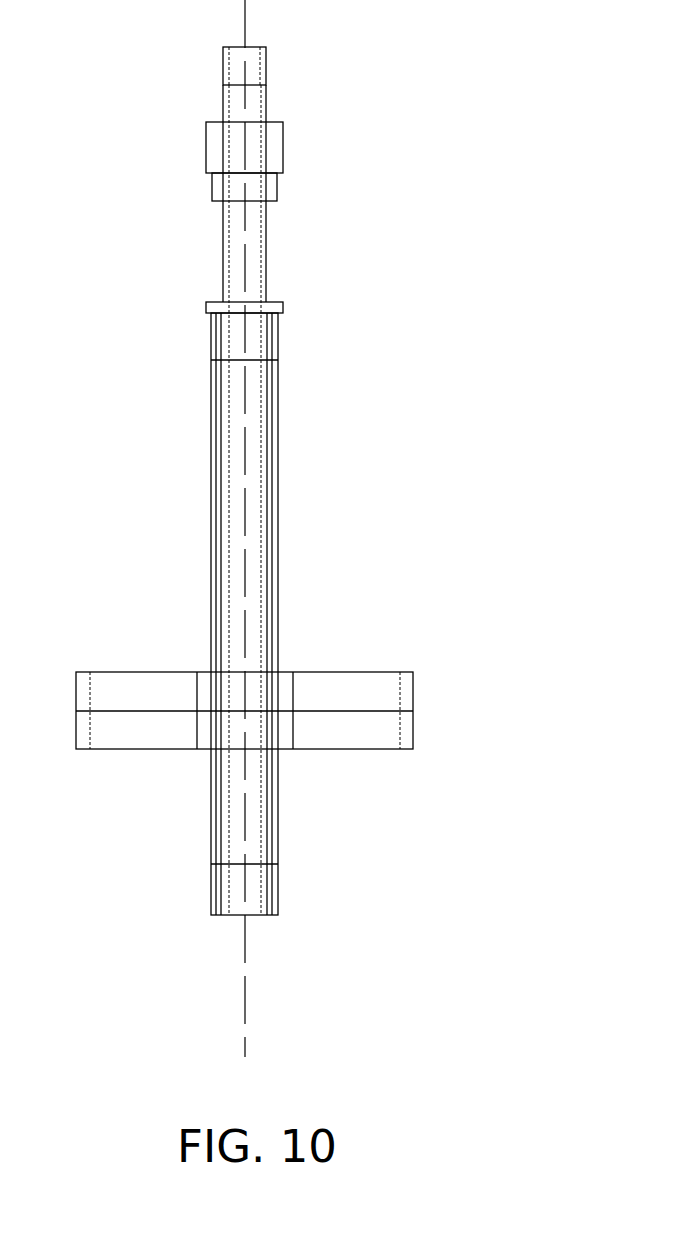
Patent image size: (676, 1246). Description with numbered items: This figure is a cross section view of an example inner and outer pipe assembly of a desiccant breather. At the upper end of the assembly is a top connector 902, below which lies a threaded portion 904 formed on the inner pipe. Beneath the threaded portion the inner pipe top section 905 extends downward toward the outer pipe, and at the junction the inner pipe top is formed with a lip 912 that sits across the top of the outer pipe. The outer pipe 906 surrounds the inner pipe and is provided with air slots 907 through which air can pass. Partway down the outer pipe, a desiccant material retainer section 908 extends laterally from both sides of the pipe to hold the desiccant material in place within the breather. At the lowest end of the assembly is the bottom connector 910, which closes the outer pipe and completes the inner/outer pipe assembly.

The top connector 902 is at (273, 61).
The threaded portion 904 is at (292, 148).
The inner pipe top section 905 is at (272, 241).
The inner pipe top with a lip 912 is at (290, 305).
The outer pipe 906 is at (285, 428).
The air slots 907 is at (207, 342).
The desiccant material retainer section 908 is at (418, 702).
The bottom connector 910 is at (287, 897).